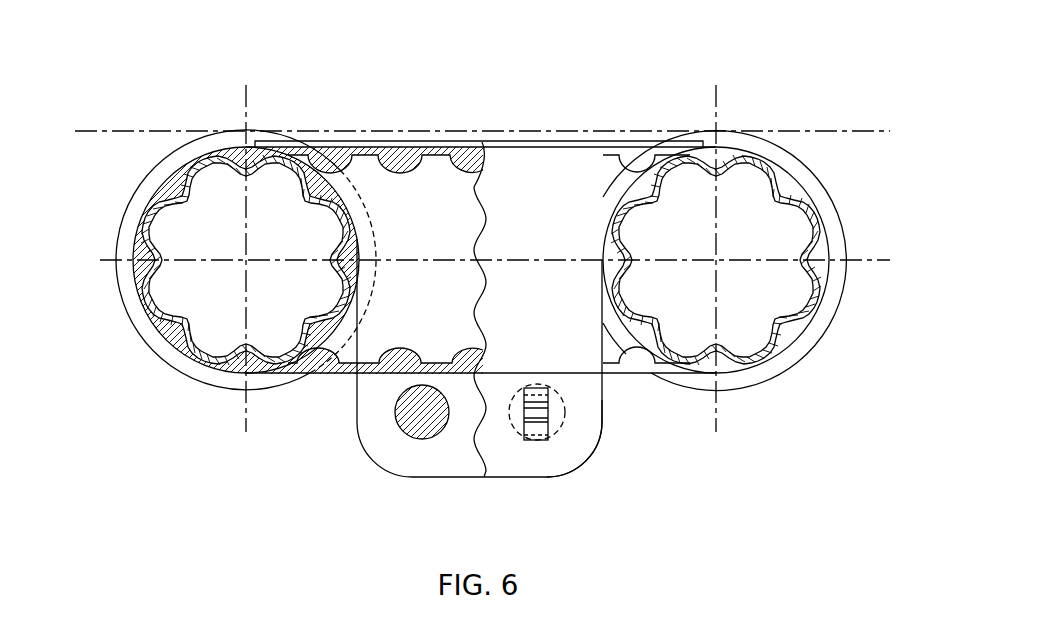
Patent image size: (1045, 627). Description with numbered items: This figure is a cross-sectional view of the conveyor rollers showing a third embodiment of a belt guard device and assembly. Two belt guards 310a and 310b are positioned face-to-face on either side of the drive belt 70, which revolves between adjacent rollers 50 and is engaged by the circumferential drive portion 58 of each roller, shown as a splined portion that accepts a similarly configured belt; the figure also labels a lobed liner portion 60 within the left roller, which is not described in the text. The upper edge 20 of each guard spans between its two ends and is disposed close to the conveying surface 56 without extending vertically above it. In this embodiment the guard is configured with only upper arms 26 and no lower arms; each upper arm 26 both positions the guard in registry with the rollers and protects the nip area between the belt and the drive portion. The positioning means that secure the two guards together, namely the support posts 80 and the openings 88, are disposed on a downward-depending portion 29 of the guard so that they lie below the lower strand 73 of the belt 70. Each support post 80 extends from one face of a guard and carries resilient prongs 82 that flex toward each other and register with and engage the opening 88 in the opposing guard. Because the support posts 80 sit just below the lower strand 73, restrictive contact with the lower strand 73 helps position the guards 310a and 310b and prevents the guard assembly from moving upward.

The upper edge 20 is at (498, 141).
The upper arm 26 is at (656, 152).
The downward-depending portion 29 is at (582, 393).
The roller 50 is at (820, 195).
The conveying surface 56 is at (138, 130).
The circumferential drive portion 58 is at (788, 193).
The lobed liner 60 is at (353, 167).
The drive belt 70 is at (790, 330).
The lower strand 73 is at (348, 363).
The support post 80 is at (399, 424).
The prong 82 is at (540, 430).
The opening 88 is at (532, 438).
The belt guard 310a is at (545, 202).
The belt guard 310b is at (447, 337).